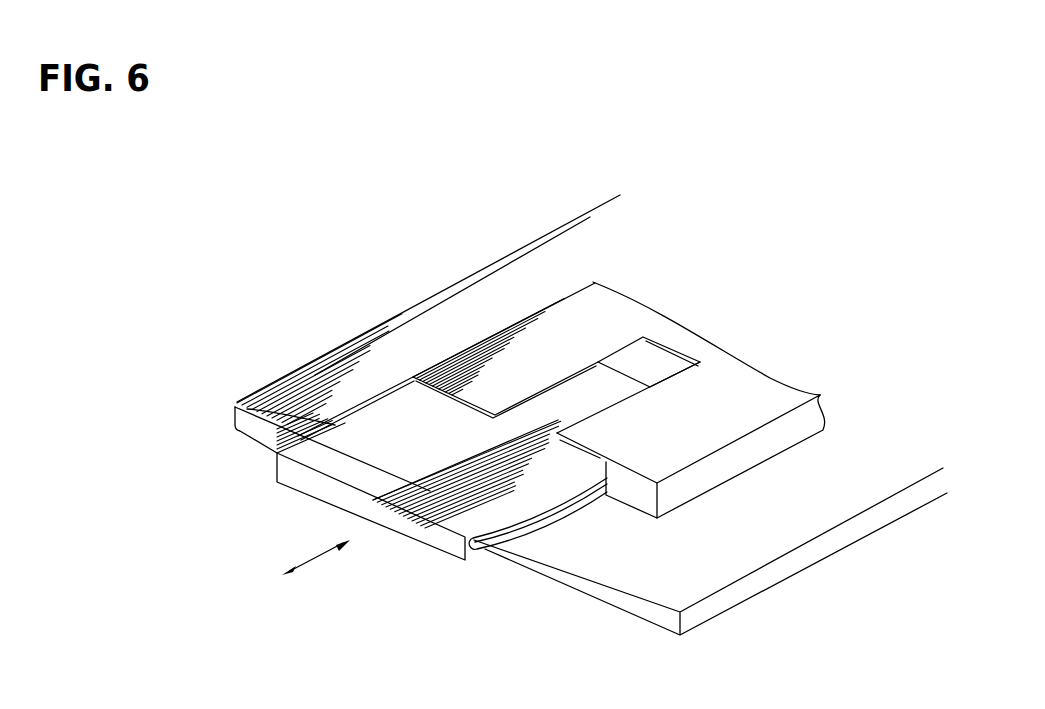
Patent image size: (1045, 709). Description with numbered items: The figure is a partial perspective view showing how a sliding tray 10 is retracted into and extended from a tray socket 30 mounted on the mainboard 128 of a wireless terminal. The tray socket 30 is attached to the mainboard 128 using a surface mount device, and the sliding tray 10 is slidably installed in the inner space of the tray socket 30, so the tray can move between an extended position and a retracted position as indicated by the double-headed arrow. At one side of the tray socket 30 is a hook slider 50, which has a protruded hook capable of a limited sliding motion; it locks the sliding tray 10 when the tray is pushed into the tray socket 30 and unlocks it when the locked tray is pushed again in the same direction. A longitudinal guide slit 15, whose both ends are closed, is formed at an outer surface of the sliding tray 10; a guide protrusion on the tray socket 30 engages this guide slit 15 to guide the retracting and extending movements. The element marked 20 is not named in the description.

The sliding tray 10 is at (276, 478).
The guide slit 15 is at (484, 545).
The flat cable 20 is at (235, 407).
The tray socket 30 is at (515, 343).
The hook slider 50 is at (645, 497).
The mainboard 128 is at (310, 370).